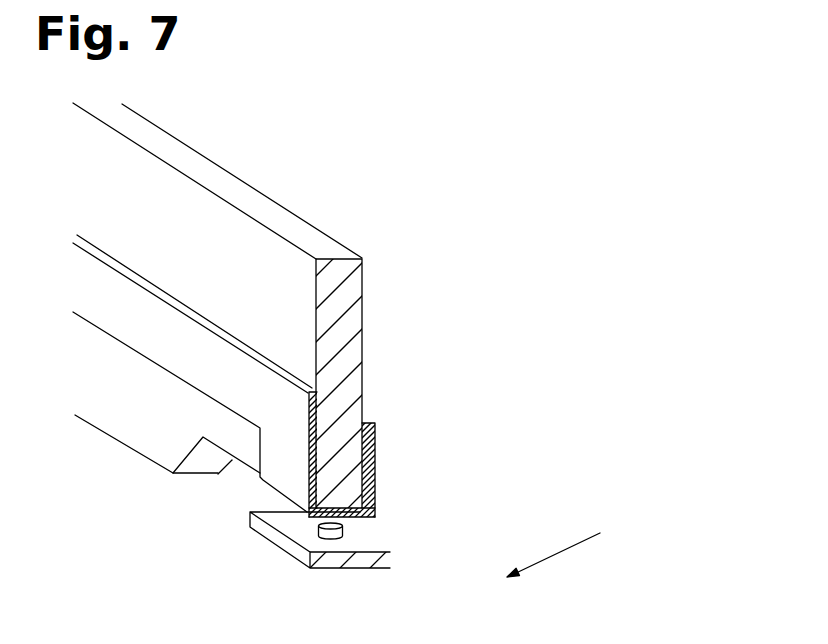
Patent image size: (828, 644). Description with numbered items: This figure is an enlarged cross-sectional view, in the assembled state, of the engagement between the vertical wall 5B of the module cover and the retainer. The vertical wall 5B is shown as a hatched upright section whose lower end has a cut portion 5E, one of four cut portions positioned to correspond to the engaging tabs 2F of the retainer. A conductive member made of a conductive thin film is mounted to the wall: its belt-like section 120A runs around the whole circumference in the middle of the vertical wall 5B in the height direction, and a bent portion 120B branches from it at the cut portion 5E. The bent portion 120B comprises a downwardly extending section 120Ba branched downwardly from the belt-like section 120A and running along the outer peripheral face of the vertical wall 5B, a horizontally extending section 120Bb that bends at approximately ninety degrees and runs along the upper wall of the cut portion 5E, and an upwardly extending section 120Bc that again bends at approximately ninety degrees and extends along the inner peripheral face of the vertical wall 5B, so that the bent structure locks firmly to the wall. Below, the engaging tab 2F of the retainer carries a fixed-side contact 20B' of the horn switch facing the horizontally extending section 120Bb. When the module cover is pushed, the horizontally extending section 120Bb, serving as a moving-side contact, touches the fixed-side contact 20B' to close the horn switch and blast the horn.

The vertical wall 5B is at (192, 163).
The belt-like section 120A is at (207, 343).
The bent portion 120B is at (537, 467).
The downwardly extending section 120Ba is at (297, 480).
The horizontally extending section 120Bb is at (365, 517).
The upwardly extending section 120Bc is at (372, 435).
The cut portion 5E is at (205, 460).
The engaging tab 2F is at (290, 545).
The fixed-side contact 20B' is at (395, 580).